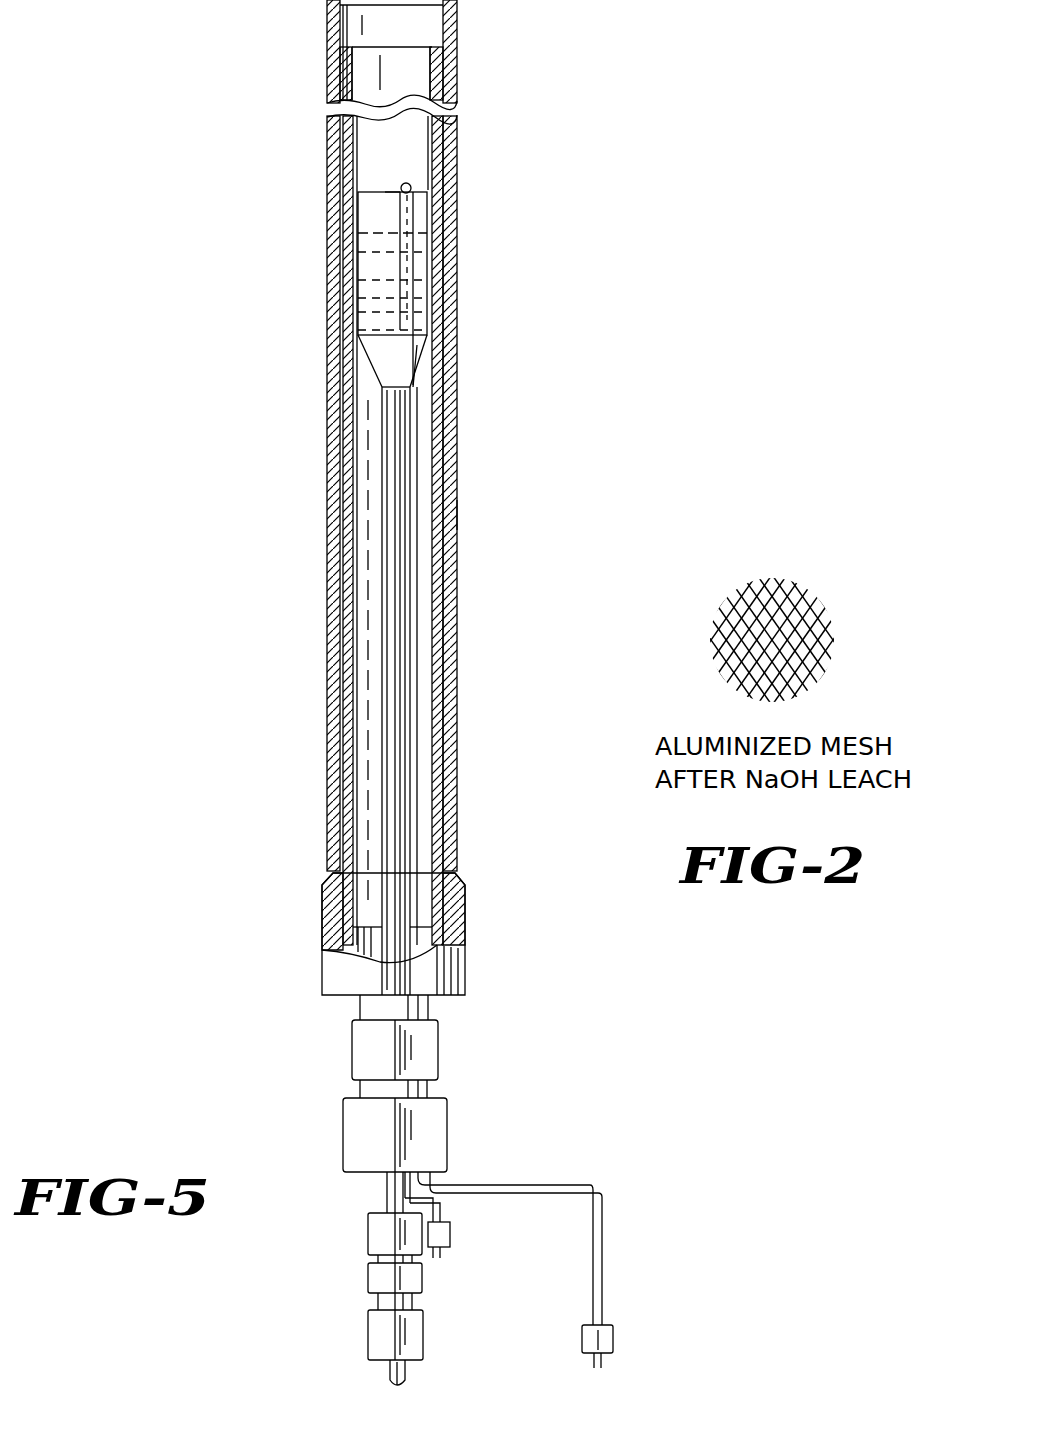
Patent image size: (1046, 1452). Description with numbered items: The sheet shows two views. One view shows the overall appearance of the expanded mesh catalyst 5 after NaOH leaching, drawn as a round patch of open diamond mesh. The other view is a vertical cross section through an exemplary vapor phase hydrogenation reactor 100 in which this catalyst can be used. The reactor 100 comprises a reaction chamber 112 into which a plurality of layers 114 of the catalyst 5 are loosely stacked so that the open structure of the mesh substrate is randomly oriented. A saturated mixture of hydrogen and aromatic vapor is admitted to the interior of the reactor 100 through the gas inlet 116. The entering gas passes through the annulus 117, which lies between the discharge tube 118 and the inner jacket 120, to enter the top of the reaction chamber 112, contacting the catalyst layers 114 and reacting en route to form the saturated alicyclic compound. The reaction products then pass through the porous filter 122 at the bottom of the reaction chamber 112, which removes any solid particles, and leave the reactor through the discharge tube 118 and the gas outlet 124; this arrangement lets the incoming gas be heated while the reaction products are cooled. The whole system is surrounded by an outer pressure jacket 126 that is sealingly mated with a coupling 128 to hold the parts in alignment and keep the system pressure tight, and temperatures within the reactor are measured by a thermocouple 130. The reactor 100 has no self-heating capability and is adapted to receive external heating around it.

In FIG. 2, the catalyst 5 is at (783, 576).
In FIG. 5, the vapor phase hydrogenation reactor 100 is at (465, 518).
In FIG. 5, the reaction chamber 112 is at (427, 212).
In FIG. 5, the layers of catalyst 114 is at (370, 258).
In FIG. 5, the gas inlet 116 is at (600, 1190).
In FIG. 5, the annulus 117 is at (422, 617).
In FIG. 5, the discharge tube 118 is at (398, 693).
In FIG. 5, the inner jacket 120 is at (455, 823).
In FIG. 5, the porous filter 122 is at (410, 385).
In FIG. 5, the gas outlet 124 is at (405, 1375).
In FIG. 5, the outer pressure jacket 126 is at (458, 720).
In FIG. 5, the coupling 128 is at (465, 985).
In FIG. 5, the thermocouple 130 is at (411, 186).